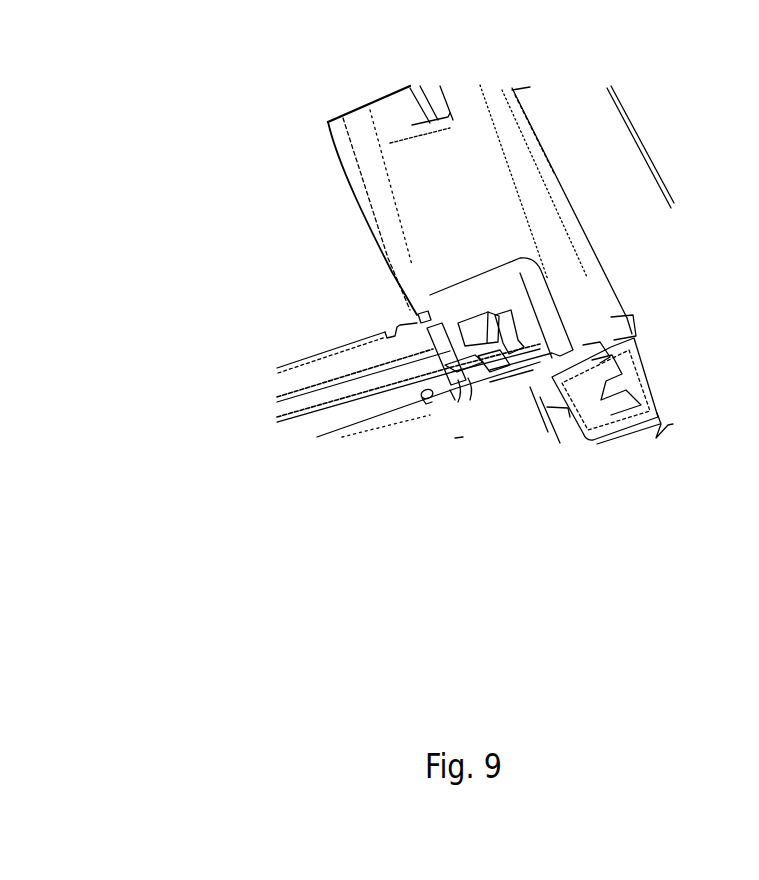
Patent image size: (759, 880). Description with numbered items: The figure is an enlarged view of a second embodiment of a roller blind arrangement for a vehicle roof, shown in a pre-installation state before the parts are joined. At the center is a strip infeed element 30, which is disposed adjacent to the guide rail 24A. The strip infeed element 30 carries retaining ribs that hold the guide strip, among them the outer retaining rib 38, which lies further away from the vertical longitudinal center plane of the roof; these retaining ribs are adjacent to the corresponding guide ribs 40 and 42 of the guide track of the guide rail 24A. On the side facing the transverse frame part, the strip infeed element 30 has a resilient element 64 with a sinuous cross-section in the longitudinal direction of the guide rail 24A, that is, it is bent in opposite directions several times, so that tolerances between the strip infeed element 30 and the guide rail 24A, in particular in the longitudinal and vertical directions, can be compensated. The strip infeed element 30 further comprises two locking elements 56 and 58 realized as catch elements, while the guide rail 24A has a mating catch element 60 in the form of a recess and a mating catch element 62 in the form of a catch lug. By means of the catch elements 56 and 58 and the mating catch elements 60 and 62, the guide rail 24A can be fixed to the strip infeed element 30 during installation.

The locking element 56 is at (423, 316).
The mating catch element 60 is at (388, 328).
The guide rail 24A is at (327, 362).
The guide rib 40 is at (298, 393).
The guide rib 42 is at (298, 414).
The mating catch element 62 is at (423, 401).
The locking element 58 is at (458, 393).
The strip infeed element 30 is at (487, 343).
The outer retaining rib 38 is at (490, 355).
The resilient element 64 is at (530, 318).